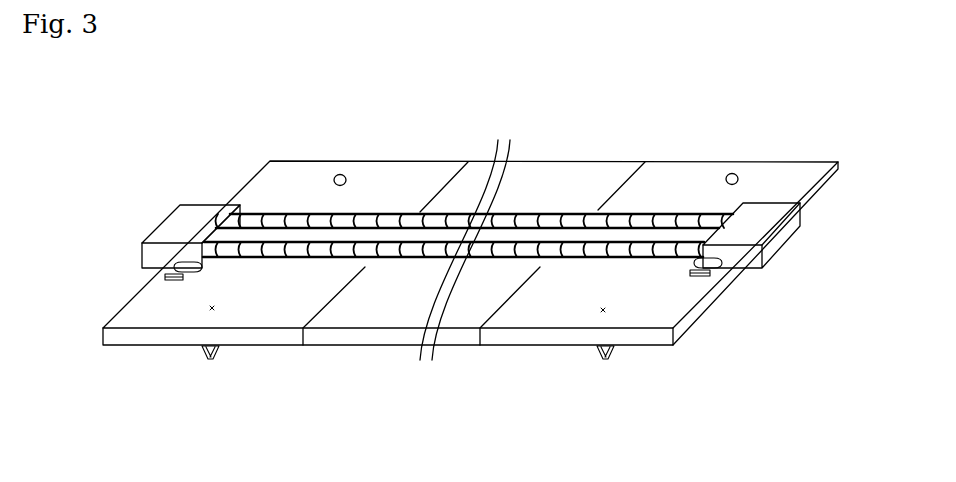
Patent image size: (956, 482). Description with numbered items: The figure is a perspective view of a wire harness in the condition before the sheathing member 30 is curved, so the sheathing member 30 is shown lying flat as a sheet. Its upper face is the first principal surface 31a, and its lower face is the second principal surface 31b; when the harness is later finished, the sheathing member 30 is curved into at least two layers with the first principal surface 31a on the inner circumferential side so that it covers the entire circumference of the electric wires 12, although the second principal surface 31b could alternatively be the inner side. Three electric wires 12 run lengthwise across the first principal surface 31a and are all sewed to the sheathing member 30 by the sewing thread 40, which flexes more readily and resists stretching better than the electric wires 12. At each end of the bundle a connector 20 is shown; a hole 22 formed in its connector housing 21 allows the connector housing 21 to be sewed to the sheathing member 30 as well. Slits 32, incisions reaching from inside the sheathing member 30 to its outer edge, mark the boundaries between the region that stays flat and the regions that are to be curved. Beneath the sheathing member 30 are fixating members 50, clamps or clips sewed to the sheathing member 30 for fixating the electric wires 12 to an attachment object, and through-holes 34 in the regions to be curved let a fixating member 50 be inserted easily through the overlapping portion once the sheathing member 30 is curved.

The electric wire 12 is at (468, 239).
The connector 20 is at (474, 240).
The connector housing 21 is at (176, 226).
The hole 22 is at (165, 268).
The sheathing member 30 is at (470, 265).
The first principal surface 31a is at (660, 312).
The second principal surface 31b is at (642, 347).
The slit 32 is at (448, 180).
The through-hole 34 is at (341, 174).
The sewing thread 40 is at (383, 224).
The fixating member 50 is at (215, 372).